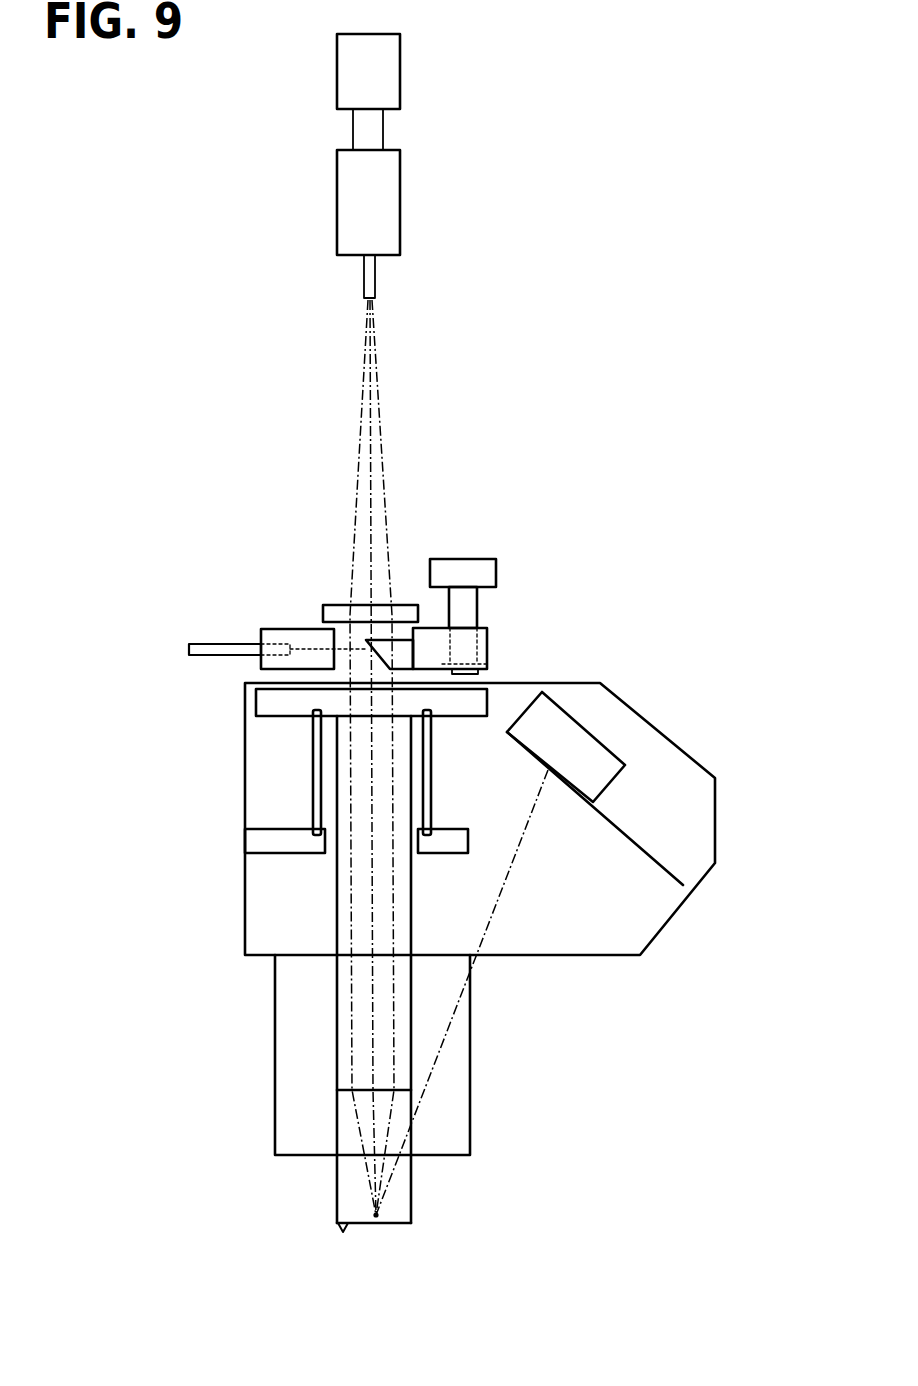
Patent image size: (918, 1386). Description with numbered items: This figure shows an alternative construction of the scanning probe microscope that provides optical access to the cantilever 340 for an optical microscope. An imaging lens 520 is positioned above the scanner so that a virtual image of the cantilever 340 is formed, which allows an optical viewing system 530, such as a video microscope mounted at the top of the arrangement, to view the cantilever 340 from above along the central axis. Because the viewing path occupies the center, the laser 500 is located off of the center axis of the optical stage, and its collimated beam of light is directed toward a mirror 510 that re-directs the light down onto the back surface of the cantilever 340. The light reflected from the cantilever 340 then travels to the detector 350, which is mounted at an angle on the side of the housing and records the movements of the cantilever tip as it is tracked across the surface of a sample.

The optical viewing system 530 is at (262, 210).
The imaging lens 520 is at (338, 603).
The mirror 510 is at (397, 638).
The laser 500 is at (218, 644).
The detector 350 is at (582, 742).
The cantilever 340 is at (340, 1231).